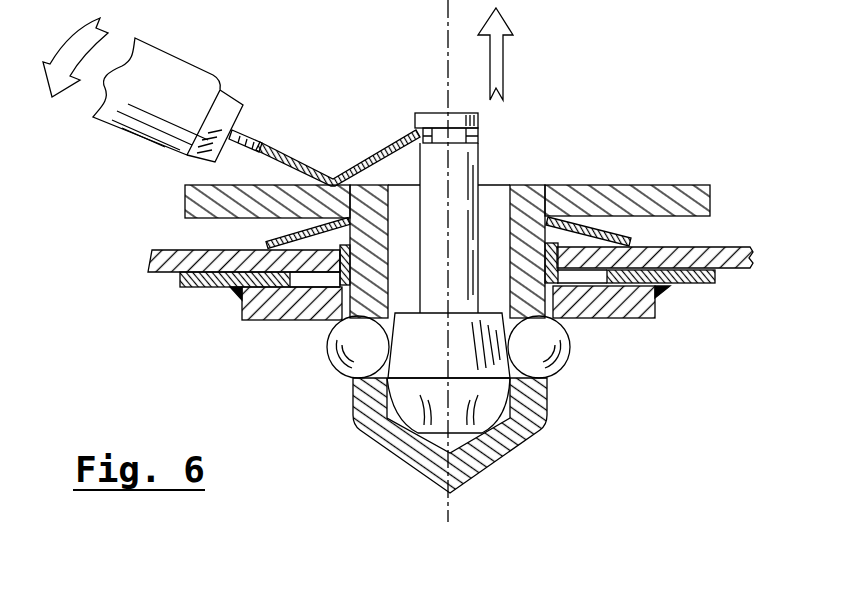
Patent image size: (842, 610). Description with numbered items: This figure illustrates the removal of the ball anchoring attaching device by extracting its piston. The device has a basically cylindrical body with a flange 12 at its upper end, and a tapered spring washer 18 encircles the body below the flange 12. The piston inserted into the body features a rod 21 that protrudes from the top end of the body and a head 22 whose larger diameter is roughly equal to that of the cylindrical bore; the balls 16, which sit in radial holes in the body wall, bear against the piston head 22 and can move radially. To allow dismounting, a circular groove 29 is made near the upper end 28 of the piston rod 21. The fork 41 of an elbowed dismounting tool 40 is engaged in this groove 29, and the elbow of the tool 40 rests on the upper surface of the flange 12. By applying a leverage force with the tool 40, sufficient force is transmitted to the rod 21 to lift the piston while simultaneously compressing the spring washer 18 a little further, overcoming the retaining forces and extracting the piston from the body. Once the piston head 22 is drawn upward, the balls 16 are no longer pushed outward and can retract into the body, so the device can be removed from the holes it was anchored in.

The flange 12 is at (185, 204).
The tapered spring washer 18 is at (273, 231).
The elbowed dismounting tool 40 is at (288, 141).
The fork 41 is at (415, 128).
The upper end of the piston rod 28 is at (430, 113).
The circular groove 29 is at (480, 140).
The rod 21 is at (480, 170).
The piston head 22 is at (400, 356).
The balls 16 is at (572, 354).